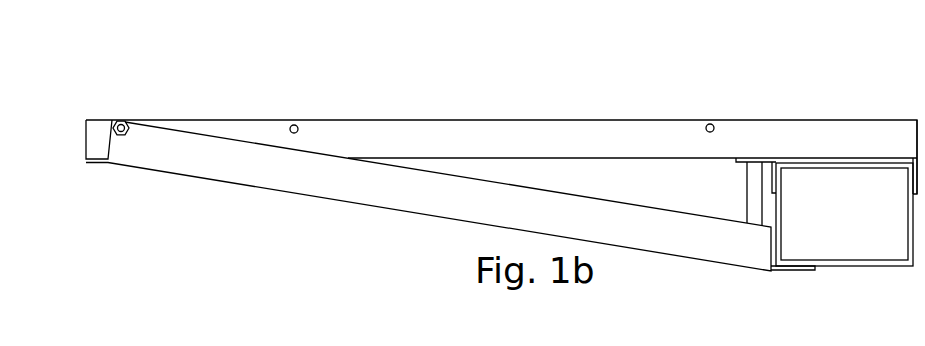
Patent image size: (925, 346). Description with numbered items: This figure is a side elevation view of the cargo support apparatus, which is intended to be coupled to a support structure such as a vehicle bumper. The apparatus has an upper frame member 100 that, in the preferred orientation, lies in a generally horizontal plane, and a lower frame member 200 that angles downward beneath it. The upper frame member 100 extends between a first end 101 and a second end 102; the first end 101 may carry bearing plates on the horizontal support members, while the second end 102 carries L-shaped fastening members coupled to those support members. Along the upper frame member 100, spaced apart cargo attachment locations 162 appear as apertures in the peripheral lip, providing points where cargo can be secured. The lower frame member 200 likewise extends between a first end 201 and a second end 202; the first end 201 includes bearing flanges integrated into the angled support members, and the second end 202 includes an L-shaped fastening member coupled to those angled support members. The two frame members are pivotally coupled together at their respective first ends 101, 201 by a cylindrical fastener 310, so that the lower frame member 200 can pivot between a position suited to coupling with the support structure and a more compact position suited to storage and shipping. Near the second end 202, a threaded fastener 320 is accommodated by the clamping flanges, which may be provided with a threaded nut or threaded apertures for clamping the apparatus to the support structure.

The upper frame member 100 is at (538, 100).
The first end 101 is at (97, 124).
The second end 102 is at (883, 123).
The cargo attachment locations 162 is at (547, 104).
The cylindrical fastener 310 is at (159, 107).
The lower frame member 200 is at (499, 227).
The first end 201 is at (142, 156).
The threaded fastener 320 is at (729, 243).
The second end 202 is at (795, 270).